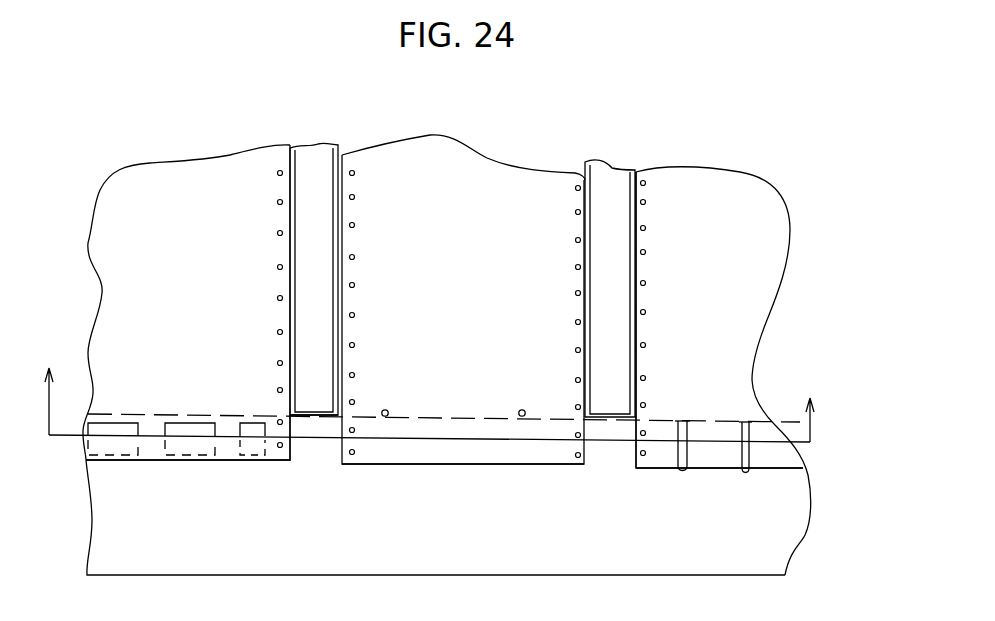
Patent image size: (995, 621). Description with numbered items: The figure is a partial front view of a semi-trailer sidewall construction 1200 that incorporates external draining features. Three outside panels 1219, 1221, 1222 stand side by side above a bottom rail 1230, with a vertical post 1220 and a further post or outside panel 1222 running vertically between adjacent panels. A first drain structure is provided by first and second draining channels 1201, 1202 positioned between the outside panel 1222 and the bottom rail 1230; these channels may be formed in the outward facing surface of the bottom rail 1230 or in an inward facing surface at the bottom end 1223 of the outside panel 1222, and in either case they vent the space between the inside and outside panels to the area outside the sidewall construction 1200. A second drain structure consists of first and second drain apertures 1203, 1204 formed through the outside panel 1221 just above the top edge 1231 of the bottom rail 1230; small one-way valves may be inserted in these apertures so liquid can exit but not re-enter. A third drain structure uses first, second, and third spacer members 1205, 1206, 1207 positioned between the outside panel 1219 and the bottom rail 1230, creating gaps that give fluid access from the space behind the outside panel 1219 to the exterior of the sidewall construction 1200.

The sidewall construction 1200 is at (722, 131).
The first draining channel 1201 is at (683, 470).
The second draining channel 1202 is at (748, 452).
The first drain aperture 1203 is at (387, 410).
The second drain aperture 1204 is at (523, 410).
The first spacer member 1205 is at (127, 422).
The second spacer member 1206 is at (195, 422).
The third spacer member 1207 is at (247, 423).
The outside panel 1219 is at (280, 462).
The vertical post 1220 is at (607, 258).
The outside panel 1221 is at (432, 465).
The outside panel / vertical post 1222 is at (320, 203).
The bottom end 1223 is at (653, 468).
The bottom rail 1230 is at (555, 552).
The top edge 1231 is at (323, 417).